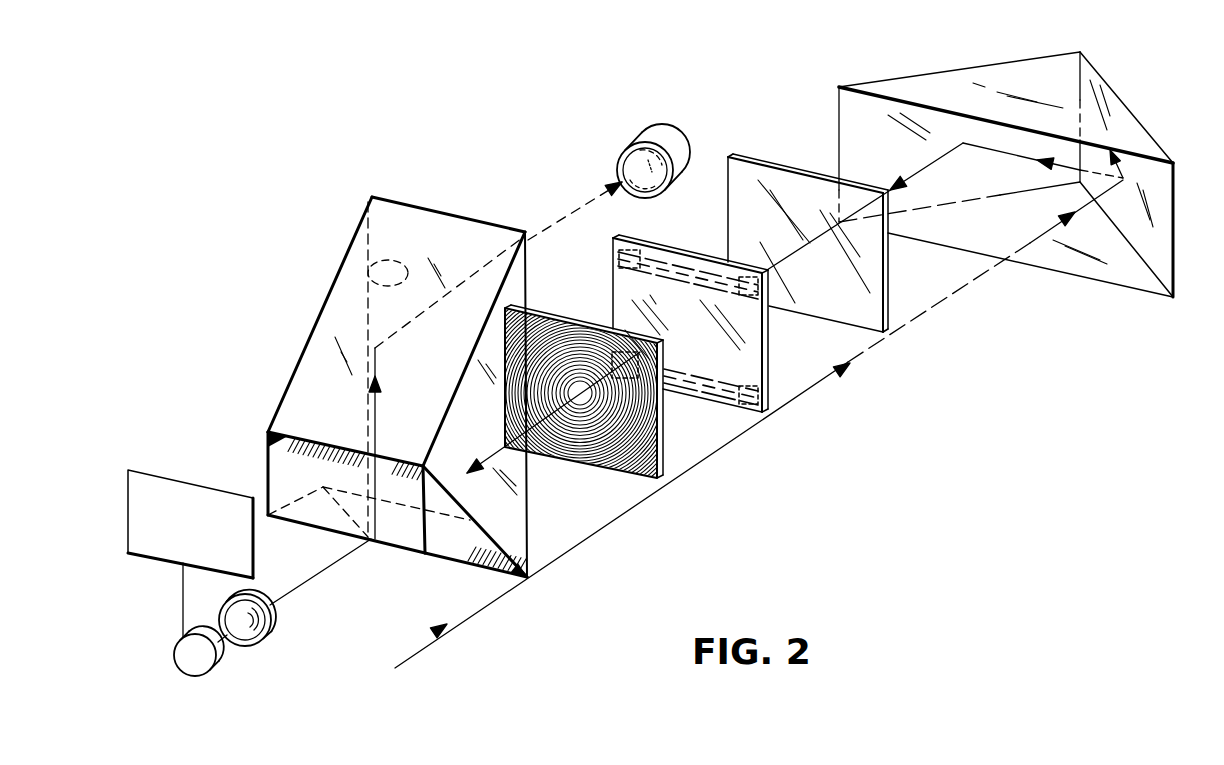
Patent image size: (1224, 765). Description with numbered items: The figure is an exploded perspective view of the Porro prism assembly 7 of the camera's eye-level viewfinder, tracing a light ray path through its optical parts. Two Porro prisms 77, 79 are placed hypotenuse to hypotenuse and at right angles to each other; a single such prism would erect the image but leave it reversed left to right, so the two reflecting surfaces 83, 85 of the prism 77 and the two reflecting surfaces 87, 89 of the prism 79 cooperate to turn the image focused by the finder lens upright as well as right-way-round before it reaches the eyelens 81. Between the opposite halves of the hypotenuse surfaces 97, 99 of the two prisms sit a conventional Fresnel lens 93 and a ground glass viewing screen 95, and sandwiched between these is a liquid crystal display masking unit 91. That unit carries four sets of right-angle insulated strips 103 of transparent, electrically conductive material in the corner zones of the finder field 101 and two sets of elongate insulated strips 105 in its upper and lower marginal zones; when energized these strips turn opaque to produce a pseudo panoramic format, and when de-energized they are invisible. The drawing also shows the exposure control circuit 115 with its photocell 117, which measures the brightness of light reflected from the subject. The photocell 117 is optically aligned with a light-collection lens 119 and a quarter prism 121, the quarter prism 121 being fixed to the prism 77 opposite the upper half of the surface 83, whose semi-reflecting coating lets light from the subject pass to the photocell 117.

The Porro prism assembly 7 is at (491, 150).
The Porro prism 77 is at (312, 463).
The Porro prism 79 is at (1174, 190).
The eyelens 81 is at (680, 148).
The reflecting surface 83 is at (350, 447).
The reflecting surface 85 is at (350, 274).
The reflecting surface 87 is at (1130, 181).
The reflecting surface 89 is at (963, 145).
The liquid crystal display masking unit 91 is at (769, 350).
The Fresnel lens 93 is at (640, 476).
The ground glass viewing screen 95 is at (890, 286).
The hypotenuse surface 97 is at (480, 238).
The hypotenuse surface 99 is at (962, 122).
The finder field 101 is at (728, 302).
The right-angle insulated strips 103 is at (613, 254).
The elongate insulated strips 105 is at (694, 260).
The exposure control circuit 115 is at (149, 470).
The photocell 117 is at (216, 662).
The light-collection lens 119 is at (272, 638).
The quarter prism 121 is at (408, 542).